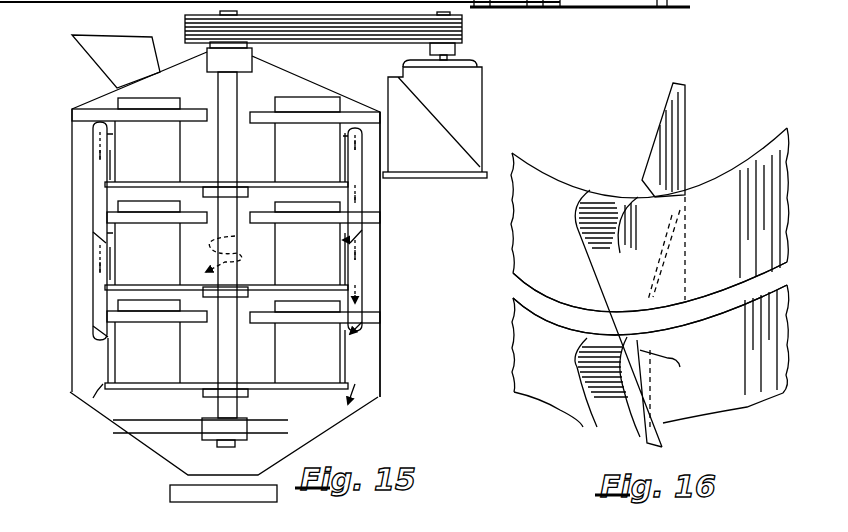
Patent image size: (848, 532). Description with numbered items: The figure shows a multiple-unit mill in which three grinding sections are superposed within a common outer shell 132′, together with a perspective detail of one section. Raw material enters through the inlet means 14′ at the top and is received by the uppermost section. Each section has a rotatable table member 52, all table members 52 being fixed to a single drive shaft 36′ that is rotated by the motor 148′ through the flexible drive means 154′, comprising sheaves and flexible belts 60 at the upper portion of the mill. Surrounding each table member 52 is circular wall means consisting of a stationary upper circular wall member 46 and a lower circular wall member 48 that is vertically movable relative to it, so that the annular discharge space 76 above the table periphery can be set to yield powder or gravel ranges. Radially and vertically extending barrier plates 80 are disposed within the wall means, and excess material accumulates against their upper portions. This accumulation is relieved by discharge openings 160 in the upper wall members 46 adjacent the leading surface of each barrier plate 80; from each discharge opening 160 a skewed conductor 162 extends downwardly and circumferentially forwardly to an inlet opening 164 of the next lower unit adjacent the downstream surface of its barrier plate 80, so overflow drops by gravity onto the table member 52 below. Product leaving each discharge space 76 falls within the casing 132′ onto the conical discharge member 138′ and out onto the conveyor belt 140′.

In FIG. 15, the inlet means 14′ is at (88, 62).
In FIG. 15, the flexible drive means 154′ is at (251, 43).
In FIG. 15, the motor 148′ is at (481, 90).
In FIG. 15, the drive shaft 36′ is at (223, 134).
In FIG. 15, the flexible belts 60 is at (141, 146).
In FIG. 15, the upper circular wall member 46 is at (108, 141).
In FIG. 16, the upper circular wall member 46 is at (710, 187).
In FIG. 15, the lower circular wall member 48 is at (109, 166).
In FIG. 16, the lower circular wall member 48 is at (650, 290).
In FIG. 15, the barrier plates 80 is at (180, 163).
In FIG. 16, the barrier plates 80 is at (667, 120).
In FIG. 15, the table member 52 is at (261, 179).
In FIG. 16, the table member 52 is at (522, 282).
In FIG. 15, the discharge openings 160 is at (111, 232).
In FIG. 16, the discharge openings 160 is at (607, 203).
In FIG. 15, the skewed conductor 162 is at (93, 195).
In FIG. 16, the skewed conductor 162 is at (597, 258).
In FIG. 15, the inlet opening 164 is at (97, 240).
In FIG. 16, the inlet opening 164 is at (680, 367).
In FIG. 15, the annular discharge space 76 is at (112, 275).
In FIG. 15, the outer shell 132′ is at (381, 290).
In FIG. 15, the conical discharge member 138′ is at (350, 410).
In FIG. 15, the conveyor belt 140′ is at (171, 493).